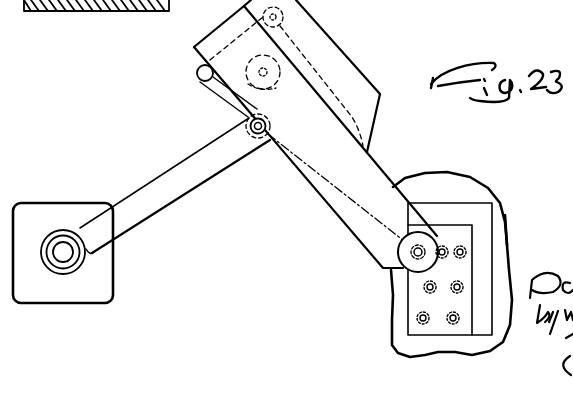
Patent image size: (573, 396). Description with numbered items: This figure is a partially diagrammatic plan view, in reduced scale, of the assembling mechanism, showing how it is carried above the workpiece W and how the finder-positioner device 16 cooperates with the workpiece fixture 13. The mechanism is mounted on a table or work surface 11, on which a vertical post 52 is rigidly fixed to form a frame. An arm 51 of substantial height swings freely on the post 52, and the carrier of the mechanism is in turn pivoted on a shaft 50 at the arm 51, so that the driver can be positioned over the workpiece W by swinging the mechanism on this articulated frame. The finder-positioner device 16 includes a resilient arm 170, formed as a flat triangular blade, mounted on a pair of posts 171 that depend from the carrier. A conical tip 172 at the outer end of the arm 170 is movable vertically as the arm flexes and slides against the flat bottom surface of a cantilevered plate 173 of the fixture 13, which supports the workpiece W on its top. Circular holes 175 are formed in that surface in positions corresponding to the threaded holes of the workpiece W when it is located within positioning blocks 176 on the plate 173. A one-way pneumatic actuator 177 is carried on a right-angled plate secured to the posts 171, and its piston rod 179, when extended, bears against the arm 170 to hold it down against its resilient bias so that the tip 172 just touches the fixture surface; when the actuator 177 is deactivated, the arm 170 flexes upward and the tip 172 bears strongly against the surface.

The work surface 11 is at (85, 14).
The fixture 13 is at (478, 204).
The finder-positioner device 16 is at (356, 128).
The shaft 50 is at (250, 126).
The arm 51 is at (165, 178).
The vertical post 52 is at (67, 243).
The resilient arm 170 is at (358, 122).
The posts 171 is at (208, 65).
The conical tip 172 is at (409, 241).
The cantilevered plate 173 is at (501, 231).
The circular holes 175 is at (440, 298).
The positioning blocks 176 is at (439, 213).
The pneumatic actuator 177 is at (274, 87).
The piston rod 179 is at (280, 72).
The workpiece W is at (410, 297).